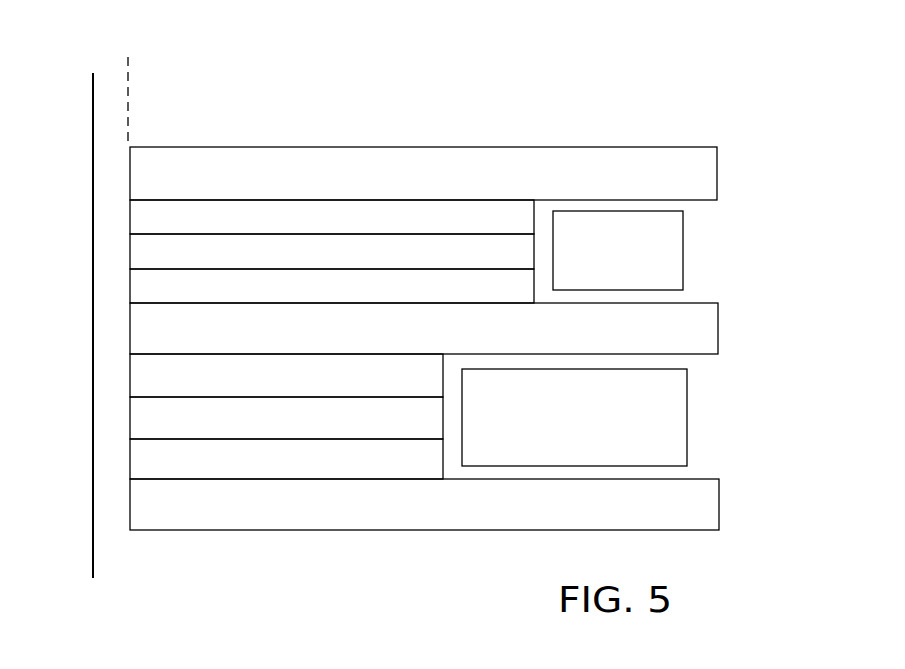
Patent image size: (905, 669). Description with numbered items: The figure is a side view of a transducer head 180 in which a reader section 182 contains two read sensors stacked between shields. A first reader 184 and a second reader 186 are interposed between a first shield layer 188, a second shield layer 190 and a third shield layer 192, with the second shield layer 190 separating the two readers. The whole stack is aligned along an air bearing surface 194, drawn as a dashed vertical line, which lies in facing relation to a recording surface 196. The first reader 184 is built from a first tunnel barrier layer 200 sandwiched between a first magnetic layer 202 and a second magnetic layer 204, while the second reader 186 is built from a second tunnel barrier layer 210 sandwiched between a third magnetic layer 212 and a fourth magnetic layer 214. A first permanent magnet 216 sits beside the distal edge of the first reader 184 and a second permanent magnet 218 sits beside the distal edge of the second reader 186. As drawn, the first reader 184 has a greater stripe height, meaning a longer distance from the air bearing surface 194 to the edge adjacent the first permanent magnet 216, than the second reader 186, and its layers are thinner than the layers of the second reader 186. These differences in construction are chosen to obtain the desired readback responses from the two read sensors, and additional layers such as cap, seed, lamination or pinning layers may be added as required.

The transducer head 180 is at (672, 40).
The reader section 182 is at (383, 140).
The first reader 184 is at (524, 197).
The second reader 186 is at (304, 490).
The first shield layer 188 is at (677, 160).
The second shield layer 190 is at (702, 326).
The third shield layer 192 is at (695, 493).
The air bearing surface 194 is at (128, 90).
The recording surface 196 is at (93, 514).
The first tunnel barrier layer 200 is at (175, 250).
The first magnetic layer 202 is at (149, 220).
The second magnetic layer 204 is at (197, 285).
The second tunnel barrier layer 210 is at (166, 432).
The third magnetic layer 212 is at (149, 383).
The fourth magnetic layer 214 is at (198, 473).
The first permanent magnet 216 is at (670, 247).
The second permanent magnet 218 is at (670, 414).